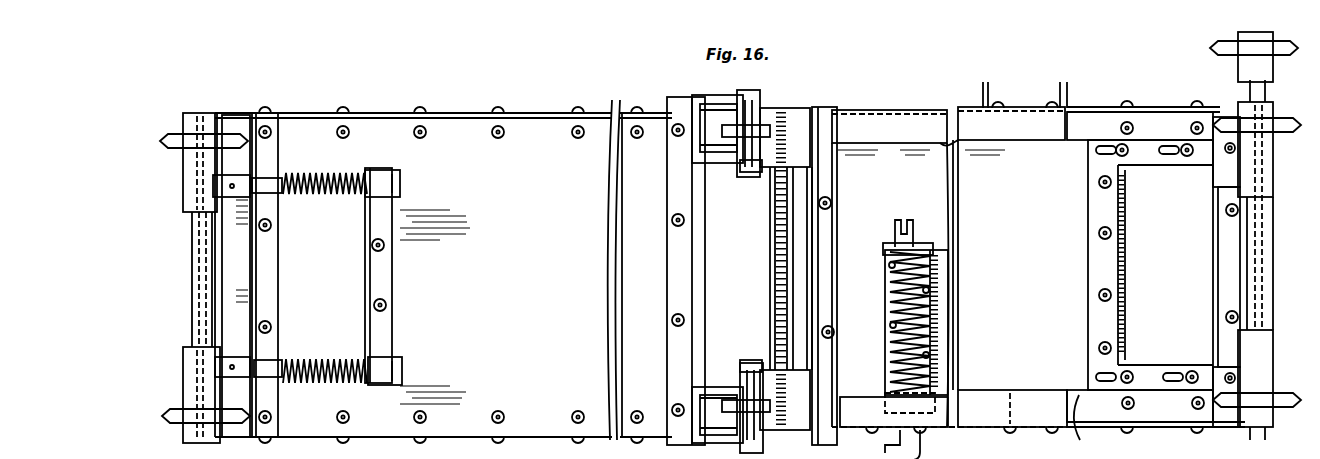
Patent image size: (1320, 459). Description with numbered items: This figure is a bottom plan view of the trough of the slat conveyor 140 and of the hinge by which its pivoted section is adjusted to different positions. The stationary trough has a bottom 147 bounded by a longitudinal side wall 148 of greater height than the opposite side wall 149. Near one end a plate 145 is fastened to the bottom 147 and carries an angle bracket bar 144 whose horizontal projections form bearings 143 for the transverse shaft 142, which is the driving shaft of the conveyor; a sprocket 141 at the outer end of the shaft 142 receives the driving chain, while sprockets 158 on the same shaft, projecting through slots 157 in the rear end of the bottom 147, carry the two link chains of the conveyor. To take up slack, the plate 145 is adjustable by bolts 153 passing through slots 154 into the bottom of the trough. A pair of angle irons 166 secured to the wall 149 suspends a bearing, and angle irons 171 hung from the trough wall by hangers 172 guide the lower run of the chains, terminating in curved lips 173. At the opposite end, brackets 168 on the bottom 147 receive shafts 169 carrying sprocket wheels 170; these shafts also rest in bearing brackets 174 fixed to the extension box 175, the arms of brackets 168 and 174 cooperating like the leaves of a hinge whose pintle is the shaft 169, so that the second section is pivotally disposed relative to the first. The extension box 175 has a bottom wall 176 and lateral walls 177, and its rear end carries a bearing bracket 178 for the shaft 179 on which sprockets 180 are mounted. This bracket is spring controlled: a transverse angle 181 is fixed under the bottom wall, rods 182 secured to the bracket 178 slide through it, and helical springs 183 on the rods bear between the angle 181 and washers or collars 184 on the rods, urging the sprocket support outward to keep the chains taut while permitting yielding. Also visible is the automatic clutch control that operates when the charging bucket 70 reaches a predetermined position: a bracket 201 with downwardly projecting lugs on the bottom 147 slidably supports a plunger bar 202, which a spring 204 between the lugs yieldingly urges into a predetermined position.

The charging bucket 70 is at (322, 455).
The conveyor 140 is at (643, 104).
The sprocket 141 is at (1215, 50).
The transverse shaft 142 is at (1273, 92).
The bearings 143 is at (1273, 196).
The angle bracket bar 144 is at (1222, 288).
The plate 145 is at (1090, 160).
The bottom 147 is at (1080, 440).
The longitudinal side wall 148 is at (1108, 107).
The side wall 149 is at (1120, 430).
The bolts 153 is at (1180, 155).
The slots 154 is at (1172, 146).
The slots 157 is at (1215, 117).
The sprockets 158 is at (1283, 133).
The angle irons 166 is at (1060, 82).
The brackets 168 is at (790, 108).
The shaft 169 is at (752, 172).
The sprocket wheels 170 is at (725, 125).
The angle irons 171 is at (958, 148).
The hangers 172 is at (950, 437).
The curved lips 173 is at (846, 110).
The bearing brackets 174 is at (696, 97).
The extension box 175 is at (527, 113).
The bottom wall 176 is at (612, 113).
The lateral walls 177 is at (456, 113).
The bearing bracket 178 is at (200, 300).
The shaft 179 is at (200, 332).
The sprockets 180 is at (176, 140).
The transverse angle 181 is at (392, 269).
The rods 182 is at (282, 178).
The helical springs 183 is at (338, 197).
The washers or collars 184 is at (282, 193).
The bracket 201 is at (888, 250).
The bar 202 is at (915, 338).
The spring 204 is at (900, 312).